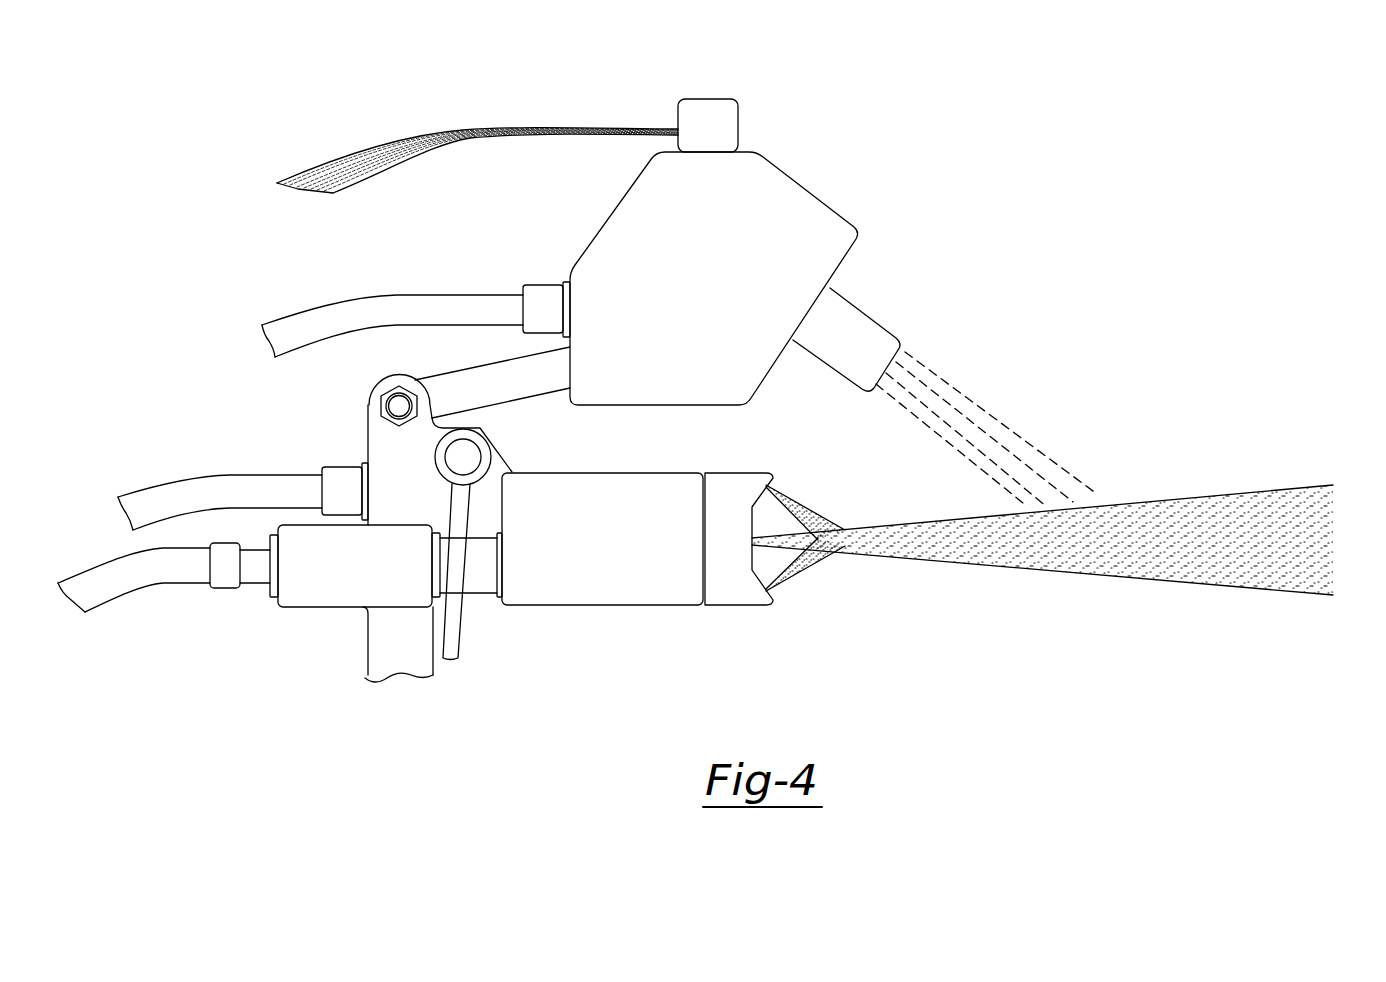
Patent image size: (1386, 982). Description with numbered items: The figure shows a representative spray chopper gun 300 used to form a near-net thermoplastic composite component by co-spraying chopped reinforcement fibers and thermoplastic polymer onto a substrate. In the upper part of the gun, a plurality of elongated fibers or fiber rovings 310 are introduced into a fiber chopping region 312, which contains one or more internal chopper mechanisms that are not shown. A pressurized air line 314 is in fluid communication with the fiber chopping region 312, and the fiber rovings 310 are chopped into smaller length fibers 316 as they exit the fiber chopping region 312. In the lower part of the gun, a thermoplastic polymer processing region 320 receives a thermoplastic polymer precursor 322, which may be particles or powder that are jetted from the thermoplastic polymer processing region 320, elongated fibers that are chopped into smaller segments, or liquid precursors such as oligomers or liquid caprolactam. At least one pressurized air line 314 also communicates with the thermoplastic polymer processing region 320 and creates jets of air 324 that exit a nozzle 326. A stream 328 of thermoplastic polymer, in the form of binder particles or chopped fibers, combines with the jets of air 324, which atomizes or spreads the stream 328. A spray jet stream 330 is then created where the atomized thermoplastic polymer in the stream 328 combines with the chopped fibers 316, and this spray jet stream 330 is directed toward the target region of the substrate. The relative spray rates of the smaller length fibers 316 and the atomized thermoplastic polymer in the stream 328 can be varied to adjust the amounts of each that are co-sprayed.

The spray chopper gun 300 is at (318, 108).
The fiber rovings 310 is at (468, 130).
The fiber chopping region 312 is at (807, 192).
The pressurized air line 314 is at (312, 310).
The smaller length fibers 316 is at (982, 406).
The thermoplastic polymer processing region 320 is at (603, 607).
The thermoplastic polymer precursor 322 is at (103, 563).
The jet of air 324 is at (810, 513).
The nozzle 326 is at (757, 473).
The stream of thermoplastic polymer 328 is at (977, 562).
The spray jet stream 330 is at (1228, 496).